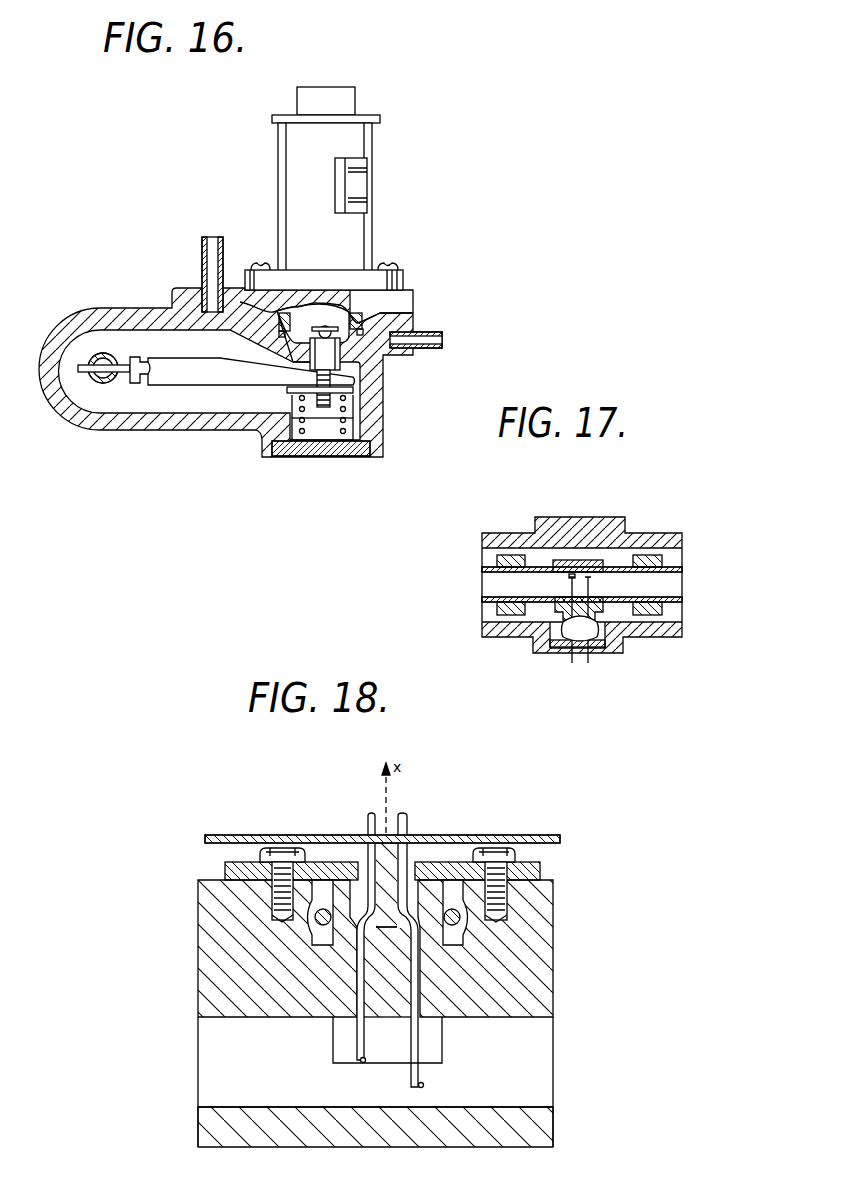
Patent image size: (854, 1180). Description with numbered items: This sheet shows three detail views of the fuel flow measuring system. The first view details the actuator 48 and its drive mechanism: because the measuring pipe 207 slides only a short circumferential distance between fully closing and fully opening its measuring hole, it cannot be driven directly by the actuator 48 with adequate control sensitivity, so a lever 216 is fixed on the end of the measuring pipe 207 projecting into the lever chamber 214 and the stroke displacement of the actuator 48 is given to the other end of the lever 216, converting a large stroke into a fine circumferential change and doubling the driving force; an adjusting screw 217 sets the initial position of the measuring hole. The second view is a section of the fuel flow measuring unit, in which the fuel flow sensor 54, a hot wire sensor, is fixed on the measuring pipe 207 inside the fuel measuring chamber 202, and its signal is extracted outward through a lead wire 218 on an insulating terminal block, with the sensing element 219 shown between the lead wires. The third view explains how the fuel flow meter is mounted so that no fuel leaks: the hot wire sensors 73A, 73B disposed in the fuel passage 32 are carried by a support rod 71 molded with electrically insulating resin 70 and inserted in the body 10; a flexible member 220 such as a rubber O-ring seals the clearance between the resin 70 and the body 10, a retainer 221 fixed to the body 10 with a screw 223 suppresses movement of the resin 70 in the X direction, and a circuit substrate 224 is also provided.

In FIG. 16, the actuator 48 is at (362, 147).
In FIG. 16, the lever chamber 214 is at (143, 310).
In FIG. 16, the measuring pipe 207 is at (100, 356).
In FIG. 17, the measuring pipe 207 is at (673, 595).
In FIG. 16, the lever 216 is at (188, 380).
In FIG. 16, the adjusting screw 217 is at (348, 390).
In FIG. 17, the fuel flow sensor 54 is at (592, 582).
In FIG. 17, the fuel measuring chamber 202 is at (667, 633).
In FIG. 17, the lead wire 218 is at (558, 653).
In FIG. 17, the sensor bulb 219 is at (580, 658).
In FIG. 18, the retainer 221 is at (240, 832).
In FIG. 18, the screw 223 is at (298, 845).
In FIG. 18, the circuit substrate 224 is at (533, 840).
In FIG. 18, the resin 70 is at (432, 890).
In FIG. 18, the flexible member 220 is at (460, 925).
In FIG. 18, the body 10 is at (545, 942).
In FIG. 18, the support rod 71 is at (417, 1040).
In FIG. 18, the hot wire sensor 73A is at (425, 1087).
In FIG. 18, the hot wire sensor 73B is at (363, 1063).
In FIG. 18, the fuel passage 32 is at (545, 1090).